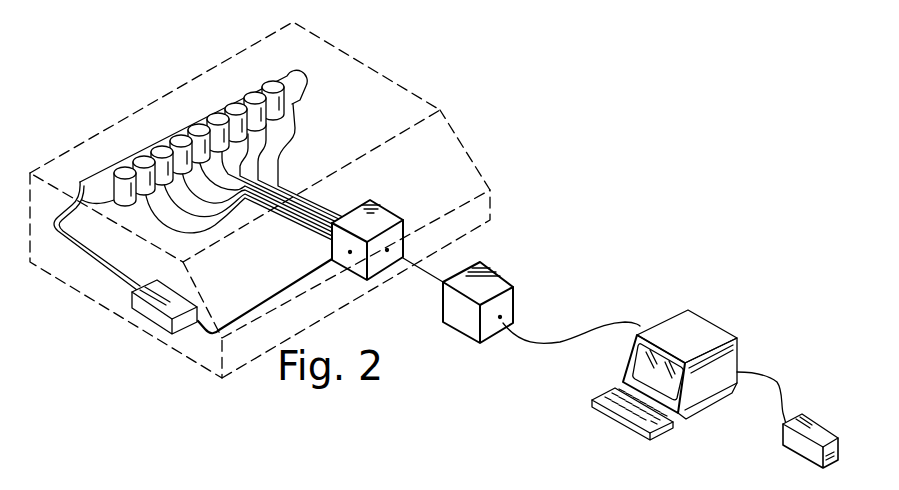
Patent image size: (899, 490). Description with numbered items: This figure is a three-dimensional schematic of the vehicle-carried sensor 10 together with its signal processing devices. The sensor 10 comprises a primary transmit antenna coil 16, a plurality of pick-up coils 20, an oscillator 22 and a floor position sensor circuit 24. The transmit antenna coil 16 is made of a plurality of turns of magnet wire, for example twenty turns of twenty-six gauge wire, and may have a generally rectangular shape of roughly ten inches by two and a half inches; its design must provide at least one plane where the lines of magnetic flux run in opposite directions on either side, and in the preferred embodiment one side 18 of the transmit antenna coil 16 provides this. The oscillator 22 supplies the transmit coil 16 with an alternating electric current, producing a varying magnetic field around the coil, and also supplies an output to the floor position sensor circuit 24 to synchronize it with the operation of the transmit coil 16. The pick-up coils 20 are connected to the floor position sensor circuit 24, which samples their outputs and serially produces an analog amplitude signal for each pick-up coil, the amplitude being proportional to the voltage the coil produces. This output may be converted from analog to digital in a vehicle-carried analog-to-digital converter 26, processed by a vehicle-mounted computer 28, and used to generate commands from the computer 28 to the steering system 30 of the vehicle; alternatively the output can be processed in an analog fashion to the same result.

The sensor 10 is at (482, 178).
The transmit antenna coil 16 is at (293, 75).
The side of the transmit antenna coil 18 is at (287, 108).
The pick-up coils 20 is at (200, 128).
The oscillator 22 is at (187, 318).
The floor position sensor circuit 24 is at (387, 250).
The analog-to-digital converter 26 is at (500, 317).
The computer 28 is at (700, 340).
The steering system 30 is at (812, 421).